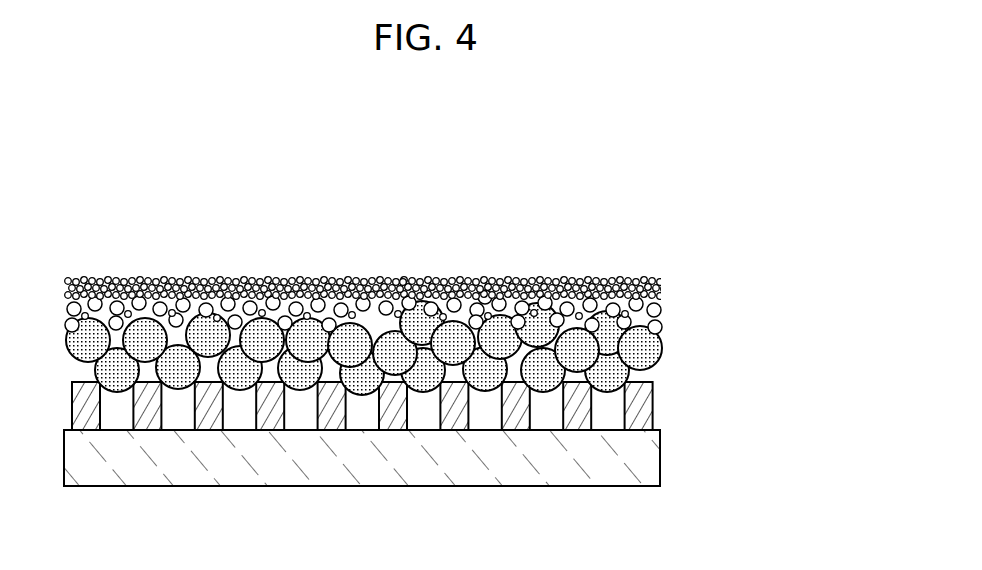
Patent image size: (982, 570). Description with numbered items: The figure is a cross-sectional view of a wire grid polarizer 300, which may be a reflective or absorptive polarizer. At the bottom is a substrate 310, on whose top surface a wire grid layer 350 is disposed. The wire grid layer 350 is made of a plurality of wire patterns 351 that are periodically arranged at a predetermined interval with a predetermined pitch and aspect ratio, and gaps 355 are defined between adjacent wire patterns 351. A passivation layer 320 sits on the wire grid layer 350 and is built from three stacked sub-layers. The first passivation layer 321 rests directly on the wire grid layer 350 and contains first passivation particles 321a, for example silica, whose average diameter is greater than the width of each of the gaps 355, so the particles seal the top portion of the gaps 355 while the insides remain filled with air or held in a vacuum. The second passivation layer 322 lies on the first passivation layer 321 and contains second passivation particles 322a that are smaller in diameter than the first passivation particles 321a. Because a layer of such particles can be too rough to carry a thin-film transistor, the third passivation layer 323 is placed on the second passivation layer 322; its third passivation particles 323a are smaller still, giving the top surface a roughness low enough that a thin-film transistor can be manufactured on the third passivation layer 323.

The wire grid polarizer 300 is at (448, 361).
The substrate 310 is at (653, 457).
The passivation layer 320 is at (449, 293).
The first passivation layer 321 is at (421, 293).
The first passivation particles 321a is at (563, 343).
The second passivation layer 322 is at (420, 264).
The second passivation particles 322a is at (485, 292).
The third passivation layer 323 is at (420, 256).
The third passivation particles 323a is at (403, 279).
The wire grid layer 350 is at (424, 465).
The wire patterns 351 is at (458, 428).
The gaps 355 is at (607, 424).